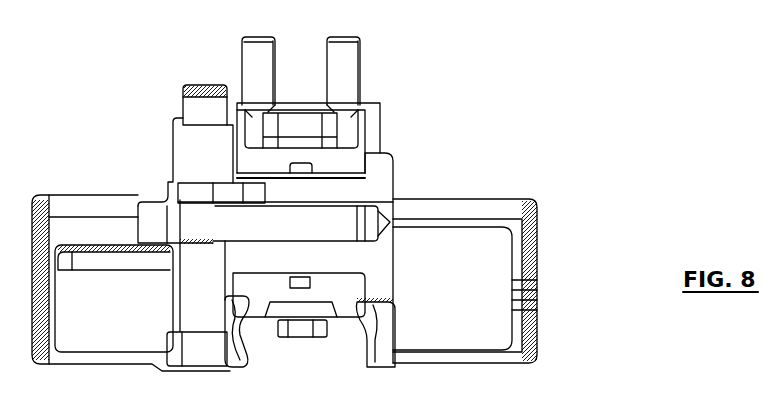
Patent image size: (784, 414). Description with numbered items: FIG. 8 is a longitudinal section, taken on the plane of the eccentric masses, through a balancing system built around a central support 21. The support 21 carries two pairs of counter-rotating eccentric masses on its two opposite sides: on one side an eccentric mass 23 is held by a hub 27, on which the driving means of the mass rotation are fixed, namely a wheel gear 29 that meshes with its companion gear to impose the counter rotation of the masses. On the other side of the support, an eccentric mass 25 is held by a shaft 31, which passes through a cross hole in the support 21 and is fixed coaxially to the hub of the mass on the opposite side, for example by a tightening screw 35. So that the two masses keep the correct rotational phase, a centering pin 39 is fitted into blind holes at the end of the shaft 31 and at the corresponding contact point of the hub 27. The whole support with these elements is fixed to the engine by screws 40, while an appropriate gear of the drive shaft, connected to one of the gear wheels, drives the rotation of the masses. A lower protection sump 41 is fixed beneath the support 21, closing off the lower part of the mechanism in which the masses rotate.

The central support 21 is at (337, 153).
The eccentric mass 23 is at (132, 325).
The eccentric mass 25 is at (475, 297).
The hub 27 is at (200, 287).
The wheel gear 29 is at (202, 112).
The shaft 31 is at (370, 190).
The tightening screw 35 is at (158, 222).
The centering pin 39 is at (197, 195).
The screws 40 is at (342, 70).
The lower protection sump 41 is at (522, 212).